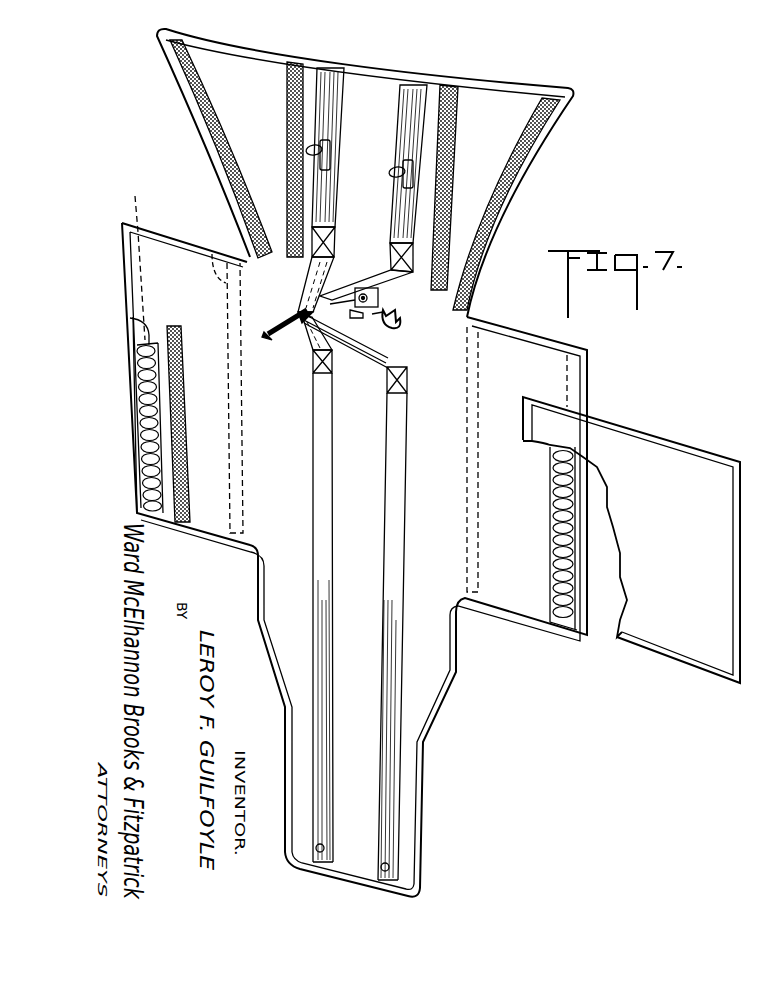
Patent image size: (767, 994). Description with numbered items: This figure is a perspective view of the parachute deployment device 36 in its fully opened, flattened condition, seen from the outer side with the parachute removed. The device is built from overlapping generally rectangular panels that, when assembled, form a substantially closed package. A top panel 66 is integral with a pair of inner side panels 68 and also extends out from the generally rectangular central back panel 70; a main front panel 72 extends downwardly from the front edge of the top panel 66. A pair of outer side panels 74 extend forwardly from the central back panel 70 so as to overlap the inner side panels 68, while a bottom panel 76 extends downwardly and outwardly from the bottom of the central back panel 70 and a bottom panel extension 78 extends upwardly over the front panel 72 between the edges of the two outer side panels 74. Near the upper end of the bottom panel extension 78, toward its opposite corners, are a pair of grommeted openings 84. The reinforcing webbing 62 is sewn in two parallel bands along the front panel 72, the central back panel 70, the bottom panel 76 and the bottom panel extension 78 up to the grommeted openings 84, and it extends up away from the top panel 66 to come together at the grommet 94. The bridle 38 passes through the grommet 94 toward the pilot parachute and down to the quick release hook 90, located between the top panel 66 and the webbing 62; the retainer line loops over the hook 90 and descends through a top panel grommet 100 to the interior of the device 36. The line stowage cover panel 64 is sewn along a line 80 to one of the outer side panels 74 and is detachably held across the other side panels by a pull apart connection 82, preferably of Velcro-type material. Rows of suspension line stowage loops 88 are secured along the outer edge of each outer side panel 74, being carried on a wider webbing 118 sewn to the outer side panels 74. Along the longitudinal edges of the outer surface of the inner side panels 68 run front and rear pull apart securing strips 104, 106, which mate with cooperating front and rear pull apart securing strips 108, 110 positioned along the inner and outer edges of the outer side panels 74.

The parachute deployment device 36 is at (576, 149).
The bridle 38 is at (283, 320).
The reinforcing webbing 62 is at (313, 492).
The line stowage cover panel 64 is at (670, 465).
The top panel 66 is at (442, 323).
The inner side panels 68 is at (268, 70).
The central back panel 70 is at (260, 527).
The main front panel 72 is at (375, 87).
The outer side panels 74 is at (177, 257).
The bottom panel 76 is at (445, 675).
The bottom panel extension 78 is at (407, 812).
The sewing line 80 is at (533, 427).
The pull apart connection 82 is at (184, 405).
The grommeted openings 84 is at (383, 866).
The suspension line stowage loops 88 is at (140, 452).
The quick release hook 90 is at (393, 328).
The grommet 94 is at (307, 310).
The top panel grommet 100 is at (378, 300).
The front pull apart securing strip 104 is at (217, 137).
The rear pull apart securing strip 106 is at (290, 108).
The front pull apart securing strip 108 is at (214, 252).
The rear pull apart securing strip 110 is at (135, 208).
The wider webbing 118 is at (137, 324).